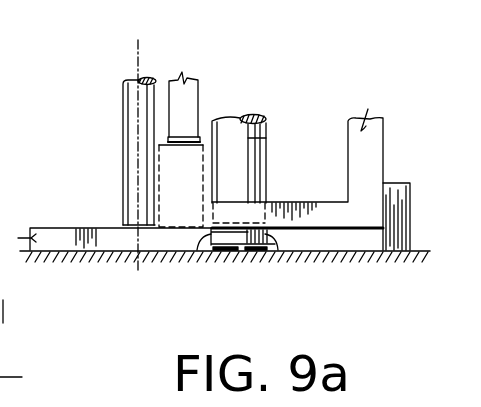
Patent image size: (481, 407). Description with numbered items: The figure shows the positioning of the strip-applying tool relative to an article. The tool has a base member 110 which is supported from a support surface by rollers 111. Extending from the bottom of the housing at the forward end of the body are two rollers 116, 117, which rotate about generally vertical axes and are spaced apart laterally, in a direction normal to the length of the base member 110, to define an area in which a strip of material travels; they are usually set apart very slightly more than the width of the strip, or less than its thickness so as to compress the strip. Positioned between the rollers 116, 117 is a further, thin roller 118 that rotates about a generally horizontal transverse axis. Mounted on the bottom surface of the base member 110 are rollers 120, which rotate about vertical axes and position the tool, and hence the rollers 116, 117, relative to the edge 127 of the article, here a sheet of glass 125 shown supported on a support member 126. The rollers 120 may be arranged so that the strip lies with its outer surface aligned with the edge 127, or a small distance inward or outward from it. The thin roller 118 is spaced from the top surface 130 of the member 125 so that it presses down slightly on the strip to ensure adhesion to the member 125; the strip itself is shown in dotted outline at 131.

The base member 110 is at (285, 207).
The rollers 111 is at (406, 199).
The roller 116 is at (128, 127).
The roller 117 is at (265, 137).
The thin roller 118 is at (190, 78).
The rollers 120 is at (273, 255).
The sheet of glass 125 is at (51, 246).
The support member 126 is at (127, 260).
The edge 127 is at (203, 246).
The top surface 130 is at (78, 228).
The strip 131 is at (170, 173).